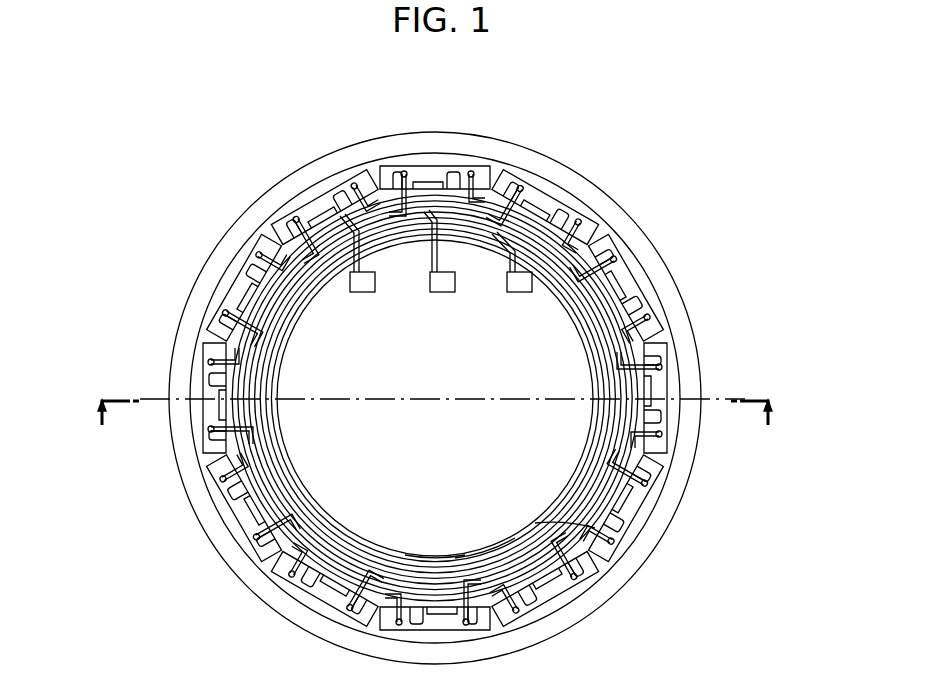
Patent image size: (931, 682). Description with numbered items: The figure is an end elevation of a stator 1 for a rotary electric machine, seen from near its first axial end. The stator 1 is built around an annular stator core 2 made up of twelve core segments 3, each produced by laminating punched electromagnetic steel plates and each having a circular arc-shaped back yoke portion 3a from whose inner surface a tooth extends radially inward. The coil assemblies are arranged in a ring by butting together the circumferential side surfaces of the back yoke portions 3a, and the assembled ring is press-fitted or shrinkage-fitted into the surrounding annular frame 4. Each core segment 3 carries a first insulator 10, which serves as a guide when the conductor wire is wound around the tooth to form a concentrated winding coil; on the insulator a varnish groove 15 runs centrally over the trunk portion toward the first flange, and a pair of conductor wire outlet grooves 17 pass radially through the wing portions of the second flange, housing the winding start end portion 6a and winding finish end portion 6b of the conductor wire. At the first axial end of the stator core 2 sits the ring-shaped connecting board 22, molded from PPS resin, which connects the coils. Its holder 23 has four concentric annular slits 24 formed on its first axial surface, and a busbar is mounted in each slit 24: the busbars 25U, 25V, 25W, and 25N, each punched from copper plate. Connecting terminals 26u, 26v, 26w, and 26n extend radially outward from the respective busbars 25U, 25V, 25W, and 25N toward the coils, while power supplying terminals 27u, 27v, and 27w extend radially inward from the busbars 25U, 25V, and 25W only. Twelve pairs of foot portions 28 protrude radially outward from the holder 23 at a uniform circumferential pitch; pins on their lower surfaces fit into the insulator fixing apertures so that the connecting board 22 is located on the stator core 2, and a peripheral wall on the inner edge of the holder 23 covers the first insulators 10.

The stator 1 is at (167, 88).
The stator core 2 is at (245, 243).
The core segment 3 is at (229, 281).
The back yoke portion 3a is at (218, 302).
The frame 4 is at (683, 470).
The winding start end portion 6a is at (605, 263).
The winding finish end portion 6b is at (637, 317).
The first insulator 10 is at (233, 511).
The varnish groove 15 is at (250, 502).
The conductor wire outlet groove 17 is at (282, 545).
The connecting board 22 is at (563, 492).
The holder 23 is at (453, 559).
The slit 24 is at (489, 556).
The U-phase busbar 25U is at (248, 362).
The V-phase busbar 25V is at (277, 447).
The W-phase busbar 25W is at (297, 492).
The neutral busbar 25N is at (323, 517).
The U-phase connecting terminal 26u is at (405, 172).
The V-phase connecting terminal 26v is at (517, 193).
The W-phase connecting terminal 26w is at (618, 270).
The neutral connecting terminal 26n is at (667, 340).
The U-phase power supplying terminal 27u is at (363, 292).
The V-phase power supplying terminal 27v is at (445, 292).
The W-phase power supplying terminal 27w is at (522, 292).
The foot portion 28 is at (633, 493).